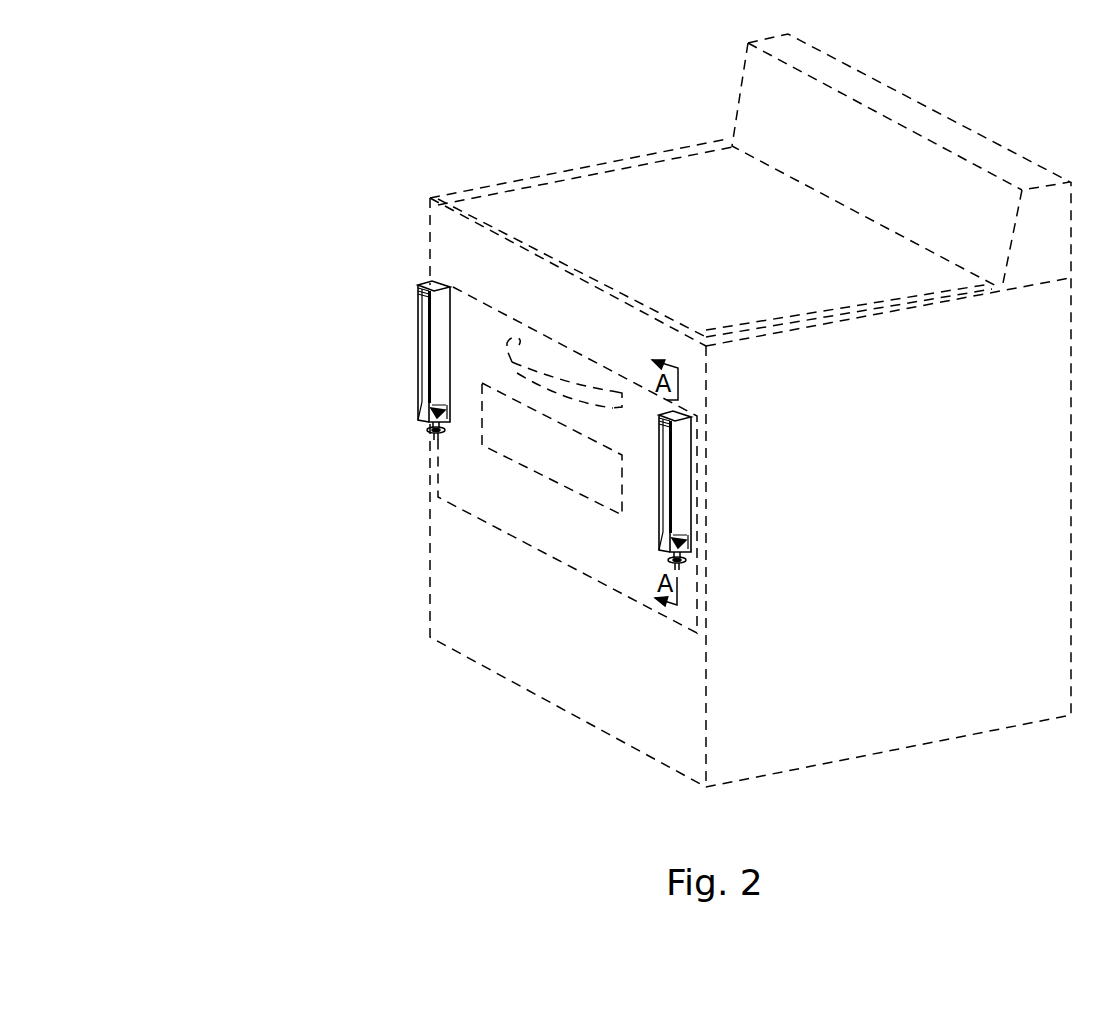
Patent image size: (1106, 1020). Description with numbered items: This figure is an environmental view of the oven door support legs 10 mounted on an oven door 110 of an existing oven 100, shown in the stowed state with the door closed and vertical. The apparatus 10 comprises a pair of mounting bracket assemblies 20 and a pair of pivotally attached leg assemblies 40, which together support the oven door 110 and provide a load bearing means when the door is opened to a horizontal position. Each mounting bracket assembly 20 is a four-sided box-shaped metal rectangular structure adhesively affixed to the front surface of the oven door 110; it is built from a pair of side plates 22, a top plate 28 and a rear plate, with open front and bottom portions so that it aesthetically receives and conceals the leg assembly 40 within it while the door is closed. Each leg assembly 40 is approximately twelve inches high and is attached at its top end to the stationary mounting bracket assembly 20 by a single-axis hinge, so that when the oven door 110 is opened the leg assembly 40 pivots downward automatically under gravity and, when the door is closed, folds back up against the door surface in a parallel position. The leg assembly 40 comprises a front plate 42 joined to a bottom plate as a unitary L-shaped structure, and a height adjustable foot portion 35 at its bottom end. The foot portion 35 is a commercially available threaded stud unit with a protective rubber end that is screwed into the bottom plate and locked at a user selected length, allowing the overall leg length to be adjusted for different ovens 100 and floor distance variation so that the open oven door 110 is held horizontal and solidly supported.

The oven door support legs 10 is at (278, 634).
The mounting bracket assembly 20 is at (458, 390).
The side plates 22 is at (437, 356).
The top plate 28 is at (433, 287).
The height adjustable foot portion 35 is at (433, 437).
The leg assembly 40 is at (412, 388).
The front plate 42 is at (424, 346).
The oven 100 is at (861, 139).
The oven door 110 is at (503, 510).